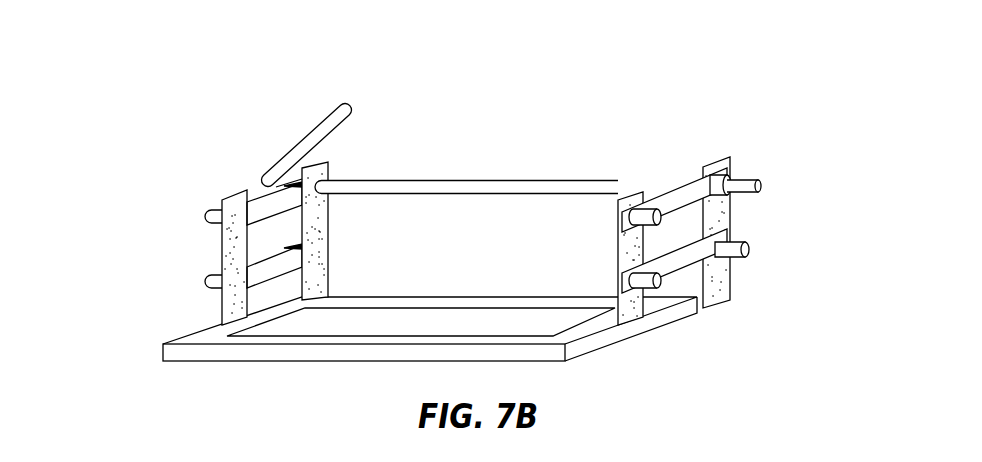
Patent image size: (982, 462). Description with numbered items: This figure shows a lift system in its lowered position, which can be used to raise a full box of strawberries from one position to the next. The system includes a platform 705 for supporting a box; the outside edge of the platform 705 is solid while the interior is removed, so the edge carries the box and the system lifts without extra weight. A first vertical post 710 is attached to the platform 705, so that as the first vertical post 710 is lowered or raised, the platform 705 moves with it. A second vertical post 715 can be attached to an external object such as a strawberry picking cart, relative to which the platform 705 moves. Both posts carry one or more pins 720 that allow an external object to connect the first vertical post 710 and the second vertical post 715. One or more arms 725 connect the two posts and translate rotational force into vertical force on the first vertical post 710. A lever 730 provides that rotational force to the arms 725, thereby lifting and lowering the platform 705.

The platform 705 is at (162, 360).
The first vertical post 710 is at (217, 307).
The second vertical post 715 is at (731, 153).
The pins 720 is at (655, 203).
The arms 725 is at (688, 192).
The lever 730 is at (338, 122).